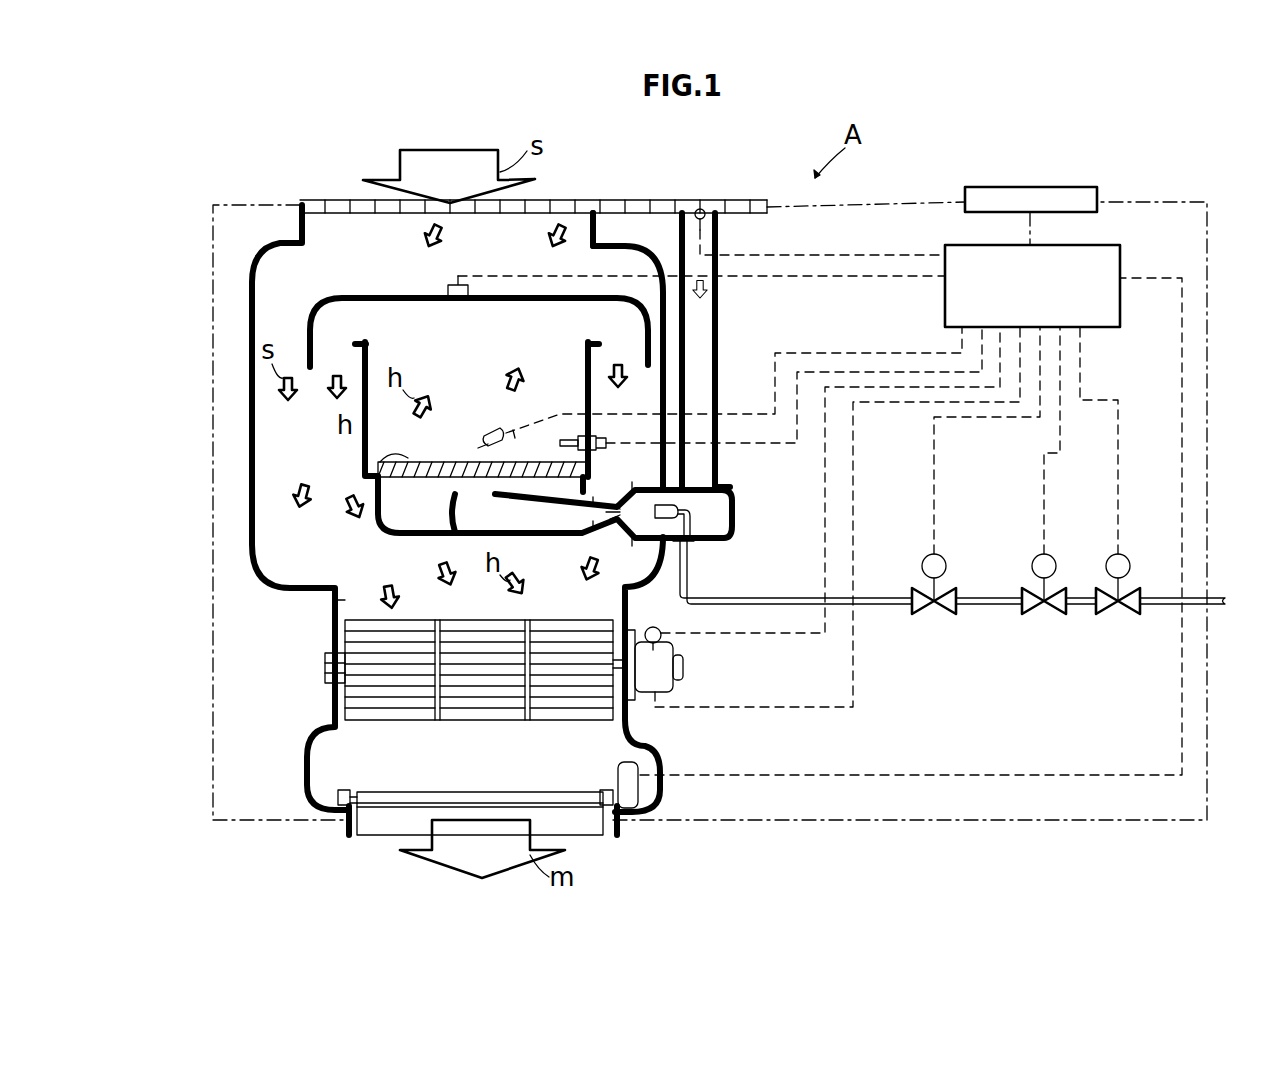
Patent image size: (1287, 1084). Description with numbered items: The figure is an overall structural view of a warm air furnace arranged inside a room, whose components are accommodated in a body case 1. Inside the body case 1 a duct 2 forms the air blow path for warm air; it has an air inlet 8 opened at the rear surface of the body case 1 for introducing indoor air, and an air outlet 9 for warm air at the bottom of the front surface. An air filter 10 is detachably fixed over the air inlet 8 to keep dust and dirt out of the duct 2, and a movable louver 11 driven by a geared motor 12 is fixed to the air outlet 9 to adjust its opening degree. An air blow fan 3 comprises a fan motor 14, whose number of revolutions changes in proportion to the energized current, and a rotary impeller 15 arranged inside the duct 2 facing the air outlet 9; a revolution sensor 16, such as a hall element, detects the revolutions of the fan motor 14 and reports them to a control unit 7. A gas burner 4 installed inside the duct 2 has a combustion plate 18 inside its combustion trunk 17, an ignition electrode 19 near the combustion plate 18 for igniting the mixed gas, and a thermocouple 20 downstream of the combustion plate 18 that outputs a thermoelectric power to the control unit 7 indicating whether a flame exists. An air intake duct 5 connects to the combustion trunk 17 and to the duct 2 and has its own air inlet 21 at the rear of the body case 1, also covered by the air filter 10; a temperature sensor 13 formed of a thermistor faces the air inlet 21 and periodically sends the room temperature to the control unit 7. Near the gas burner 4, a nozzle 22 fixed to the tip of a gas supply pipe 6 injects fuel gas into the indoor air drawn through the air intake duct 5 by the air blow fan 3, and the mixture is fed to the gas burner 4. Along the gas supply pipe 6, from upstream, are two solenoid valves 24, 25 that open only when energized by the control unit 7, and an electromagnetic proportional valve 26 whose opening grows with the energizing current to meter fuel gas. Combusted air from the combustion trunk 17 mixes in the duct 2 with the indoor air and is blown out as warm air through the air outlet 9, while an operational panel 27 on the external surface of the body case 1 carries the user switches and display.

The body case 1 is at (211, 420).
The duct 2 is at (270, 240).
The air blow fan 3 is at (370, 728).
The gas burner 4 is at (376, 518).
The air intake duct 5 is at (720, 320).
The gas supply pipe 6 is at (988, 608).
The control unit 7 is at (1120, 318).
The air inlet 8 is at (572, 218).
The air outlet 9 is at (600, 810).
The air filter 10 is at (362, 205).
The movable louver 11 is at (603, 838).
The geared motor 12 is at (640, 768).
The temperature sensor 13 is at (706, 216).
The fan motor 14 is at (658, 648).
The rotary impeller 15 is at (372, 656).
The revolution sensor 16 is at (655, 626).
The combustion trunk 17 is at (362, 447).
The combustion plate 18 is at (375, 462).
The ignition electrode 19 is at (490, 432).
The thermocouple 20 is at (570, 440).
The air inlet 21 is at (710, 216).
The nozzle 22 is at (682, 511).
The solenoid valve 24 is at (1104, 612).
The solenoid valve 25 is at (1032, 612).
The electromagnetic proportional valve 26 is at (928, 612).
The operational panel 27 is at (1030, 188).